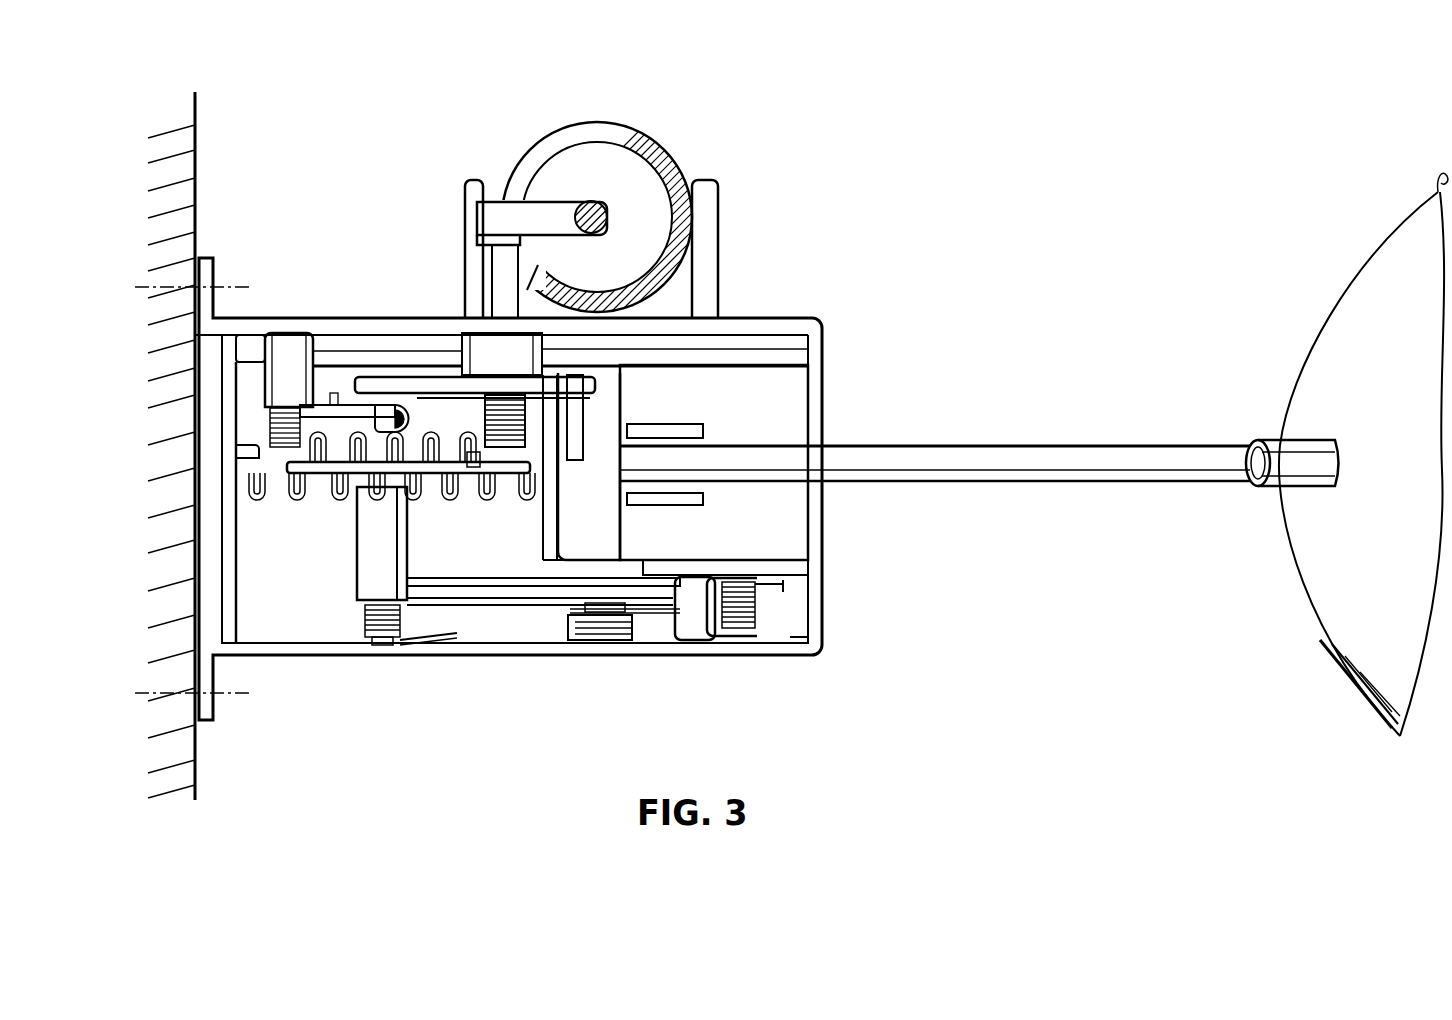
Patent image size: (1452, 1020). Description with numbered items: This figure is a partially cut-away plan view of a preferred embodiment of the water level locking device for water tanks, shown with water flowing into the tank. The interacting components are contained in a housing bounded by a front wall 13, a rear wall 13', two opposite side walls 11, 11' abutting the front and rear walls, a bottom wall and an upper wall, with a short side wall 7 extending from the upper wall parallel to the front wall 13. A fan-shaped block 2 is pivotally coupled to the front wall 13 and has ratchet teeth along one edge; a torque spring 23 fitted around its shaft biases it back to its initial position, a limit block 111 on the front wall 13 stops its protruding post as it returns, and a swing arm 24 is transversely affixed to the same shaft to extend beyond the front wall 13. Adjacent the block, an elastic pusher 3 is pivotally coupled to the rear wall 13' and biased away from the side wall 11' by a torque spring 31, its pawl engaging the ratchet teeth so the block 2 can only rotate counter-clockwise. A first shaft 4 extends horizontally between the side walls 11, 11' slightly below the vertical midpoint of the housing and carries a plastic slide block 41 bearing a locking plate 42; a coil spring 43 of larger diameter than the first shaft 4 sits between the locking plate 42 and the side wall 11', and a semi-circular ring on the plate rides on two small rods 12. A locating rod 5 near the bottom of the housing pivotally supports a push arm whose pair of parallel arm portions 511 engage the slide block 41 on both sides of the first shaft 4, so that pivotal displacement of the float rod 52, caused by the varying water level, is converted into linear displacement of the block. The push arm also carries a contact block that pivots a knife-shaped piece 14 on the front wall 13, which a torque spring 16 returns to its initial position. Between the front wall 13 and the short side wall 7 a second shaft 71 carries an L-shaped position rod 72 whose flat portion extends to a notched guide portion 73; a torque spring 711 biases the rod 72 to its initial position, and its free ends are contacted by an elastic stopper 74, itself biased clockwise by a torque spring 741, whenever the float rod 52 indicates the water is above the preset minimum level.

The fan-shaped block 2 is at (463, 393).
The elastic pusher 3 is at (387, 403).
The first shaft 4 is at (750, 455).
The locating rod 5 is at (385, 467).
The short side wall 7 is at (247, 468).
The side wall 11 is at (469, 489).
The side wall 11' is at (843, 490).
The small rods 12 is at (790, 357).
The front wall 13 is at (515, 468).
The rear wall 13' is at (842, 635).
The knife-shaped piece 14 is at (552, 617).
The torque spring 16 is at (623, 637).
The torque spring 23 is at (527, 423).
The swing arm 24 is at (562, 210).
The torque spring 31 is at (300, 417).
The slide block 41 is at (613, 512).
The locking plate 42 is at (550, 553).
The coil spring 43 is at (300, 497).
The float rod 52 is at (1057, 455).
The second shaft 71 is at (375, 640).
The L-shaped position rod 72 is at (490, 590).
The guide portion 73 is at (430, 477).
The elastic stopper 74 is at (695, 633).
The limit block 111 is at (600, 347).
The parallel arm portions 511 is at (700, 428).
The torque spring 711 is at (365, 622).
The torque spring 741 is at (753, 605).